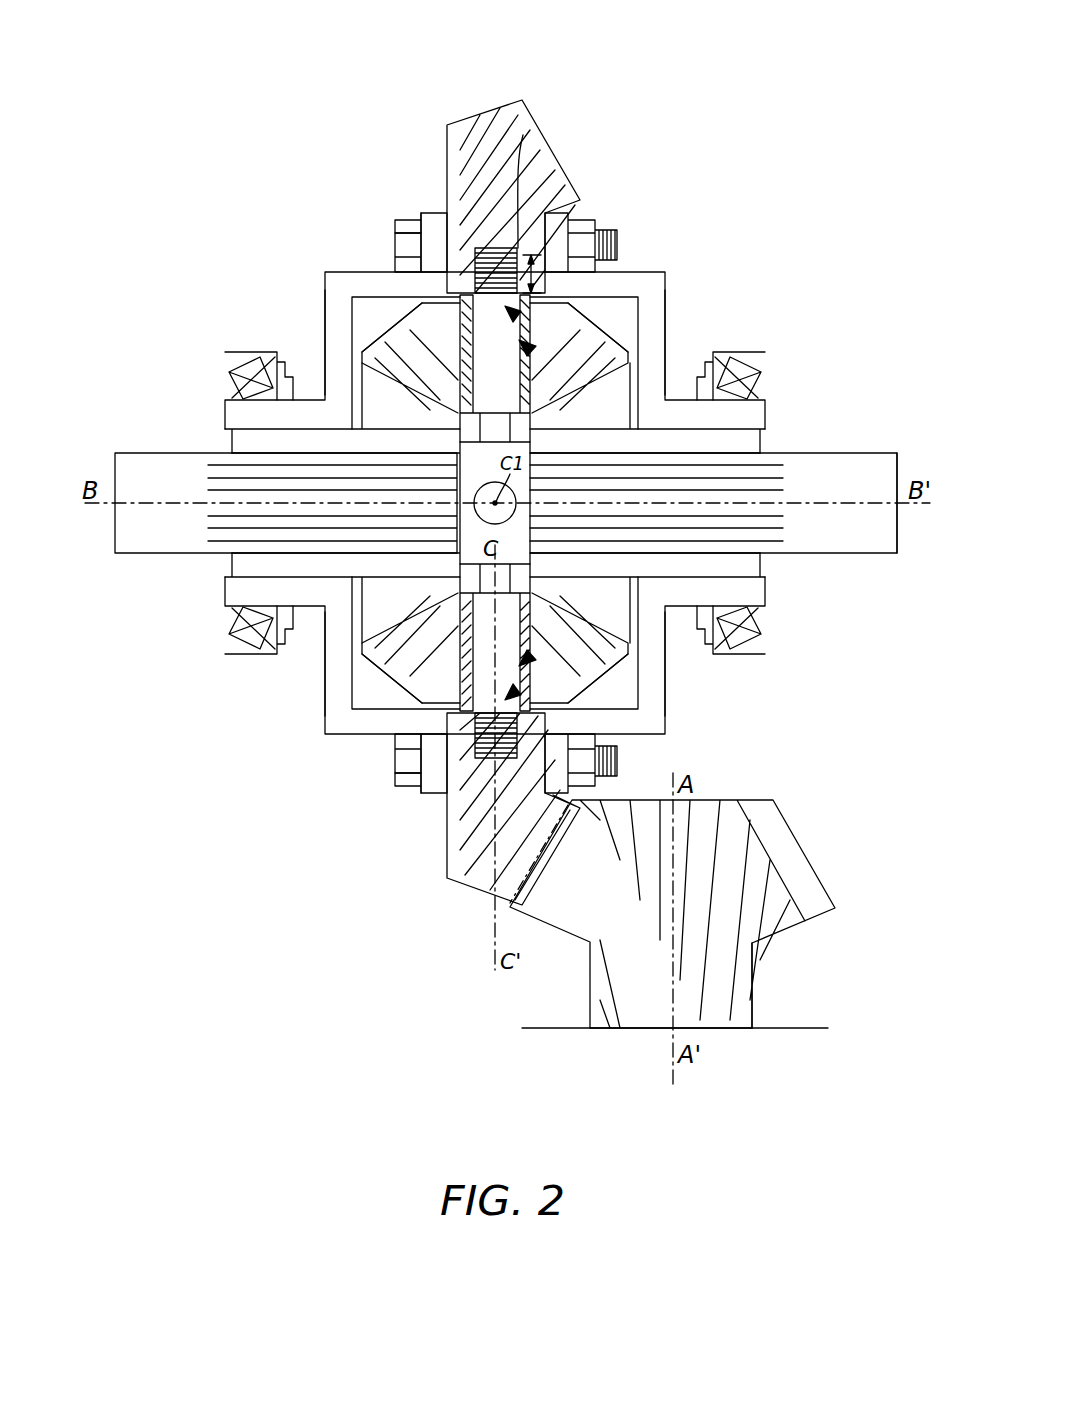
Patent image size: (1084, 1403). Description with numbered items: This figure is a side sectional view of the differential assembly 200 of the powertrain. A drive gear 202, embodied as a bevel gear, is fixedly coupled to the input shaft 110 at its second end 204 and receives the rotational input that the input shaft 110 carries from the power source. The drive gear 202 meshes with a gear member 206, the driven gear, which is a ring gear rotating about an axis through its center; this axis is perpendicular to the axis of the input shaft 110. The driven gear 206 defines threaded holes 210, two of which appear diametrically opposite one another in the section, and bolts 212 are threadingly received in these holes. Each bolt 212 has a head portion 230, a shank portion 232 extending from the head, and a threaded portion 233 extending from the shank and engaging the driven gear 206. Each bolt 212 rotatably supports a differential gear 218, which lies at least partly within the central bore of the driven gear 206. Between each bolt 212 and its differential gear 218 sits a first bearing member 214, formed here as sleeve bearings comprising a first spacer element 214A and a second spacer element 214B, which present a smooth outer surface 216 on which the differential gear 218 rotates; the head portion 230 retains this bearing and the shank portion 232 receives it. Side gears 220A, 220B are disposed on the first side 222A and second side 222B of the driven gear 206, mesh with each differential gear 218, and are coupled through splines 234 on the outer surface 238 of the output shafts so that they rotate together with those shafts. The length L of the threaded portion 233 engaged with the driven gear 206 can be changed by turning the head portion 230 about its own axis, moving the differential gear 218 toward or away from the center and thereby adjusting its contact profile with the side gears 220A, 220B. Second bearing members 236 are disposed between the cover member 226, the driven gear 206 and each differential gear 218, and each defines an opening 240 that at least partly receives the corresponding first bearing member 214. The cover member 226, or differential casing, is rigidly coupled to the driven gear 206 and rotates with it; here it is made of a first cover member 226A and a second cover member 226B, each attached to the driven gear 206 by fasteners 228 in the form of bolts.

The differential assembly 200 is at (216, 92).
The drive gear 202 is at (750, 858).
The second end 204 is at (754, 968).
The input shaft 110 is at (755, 1011).
The gear member 206 is at (462, 124).
The threaded holes 210 is at (525, 150).
The bolts 212 is at (560, 296).
The first bearing members 214 is at (600, 330).
The first spacer element 214A is at (690, 362).
The second spacer element 214B is at (632, 350).
The smooth outer surface 216 is at (470, 380).
The differential gear 218 is at (428, 325).
The side gear 220A is at (597, 407).
The side gear 220B is at (393, 423).
The first side 222A is at (446, 170).
The second side 222B is at (583, 215).
The cover member 226 is at (636, 272).
The first cover member 226A is at (392, 272).
The second cover member 226B is at (666, 271).
The fasteners 228 is at (400, 243).
The head portion 230 is at (455, 440).
The shank portion 232 is at (367, 378).
The threaded portion 233 is at (445, 298).
The splines 234 is at (762, 467).
The second bearing members 236 is at (592, 289).
The outer surface 238 is at (169, 491).
The opening 240 is at (500, 278).
The length L is at (537, 262).